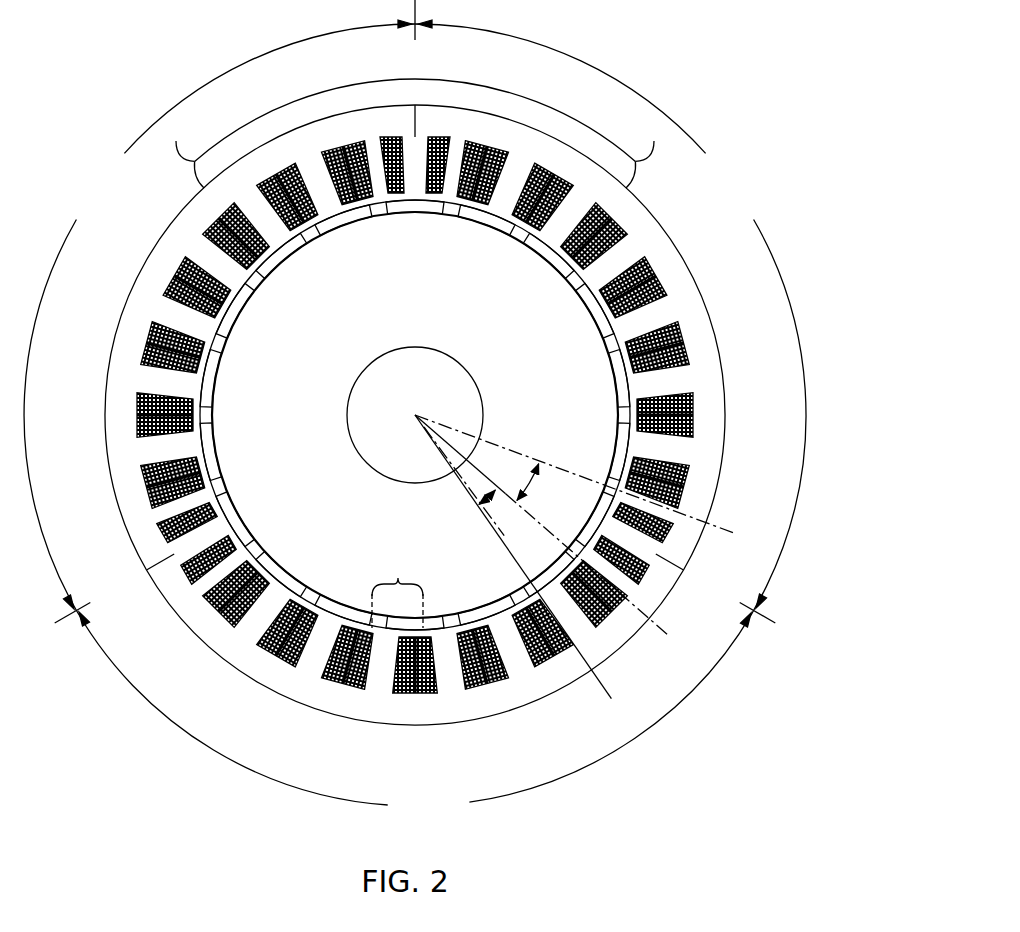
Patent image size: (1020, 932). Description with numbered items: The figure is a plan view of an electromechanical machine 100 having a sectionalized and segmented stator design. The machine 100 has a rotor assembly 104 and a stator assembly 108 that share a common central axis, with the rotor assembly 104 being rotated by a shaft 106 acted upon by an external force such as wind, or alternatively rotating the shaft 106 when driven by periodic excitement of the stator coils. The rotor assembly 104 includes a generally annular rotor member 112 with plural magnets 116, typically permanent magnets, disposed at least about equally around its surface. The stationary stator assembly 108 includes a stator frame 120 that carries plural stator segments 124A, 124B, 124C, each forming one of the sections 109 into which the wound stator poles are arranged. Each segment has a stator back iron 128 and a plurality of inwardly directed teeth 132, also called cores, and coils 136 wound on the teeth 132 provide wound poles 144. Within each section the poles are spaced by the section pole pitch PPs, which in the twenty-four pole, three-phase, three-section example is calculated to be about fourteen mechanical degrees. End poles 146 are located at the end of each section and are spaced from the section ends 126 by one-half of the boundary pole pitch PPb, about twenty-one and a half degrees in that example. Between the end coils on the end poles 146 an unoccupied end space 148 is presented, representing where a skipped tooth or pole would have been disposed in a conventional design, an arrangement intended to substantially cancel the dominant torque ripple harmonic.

The electromechanical machine 100 is at (652, 60).
The rotor assembly 104 is at (406, 417).
The shaft 106 is at (412, 360).
The stator assembly 108 is at (567, 138).
The sections 109 is at (415, 406).
The rotor member 112 is at (415, 415).
The magnets 116 is at (568, 258).
The stator frame 120 is at (492, 86).
The stator segment 124A is at (506, 706).
The stator segment 124B is at (686, 258).
The stator segment 124C is at (118, 332).
The section ends 126 is at (413, 107).
The stator back iron 128 is at (174, 247).
The teeth 132 is at (382, 663).
The coils 136 is at (357, 665).
The wound poles 144 is at (397, 592).
The end poles 146 is at (667, 505).
The end space 148 is at (644, 541).
The section pole pitch PPs is at (497, 509).
The boundary pole pitch PPb is at (539, 482).